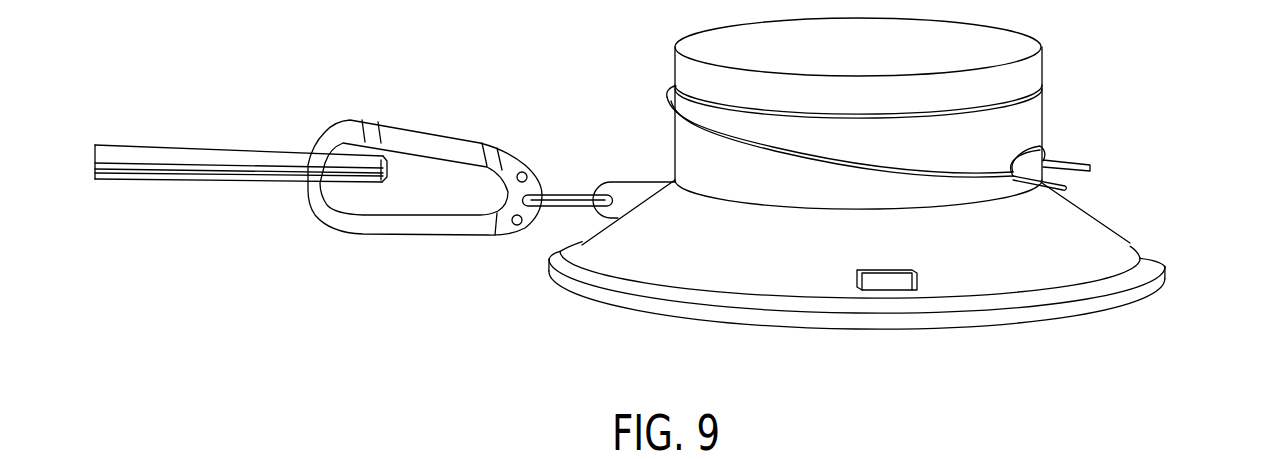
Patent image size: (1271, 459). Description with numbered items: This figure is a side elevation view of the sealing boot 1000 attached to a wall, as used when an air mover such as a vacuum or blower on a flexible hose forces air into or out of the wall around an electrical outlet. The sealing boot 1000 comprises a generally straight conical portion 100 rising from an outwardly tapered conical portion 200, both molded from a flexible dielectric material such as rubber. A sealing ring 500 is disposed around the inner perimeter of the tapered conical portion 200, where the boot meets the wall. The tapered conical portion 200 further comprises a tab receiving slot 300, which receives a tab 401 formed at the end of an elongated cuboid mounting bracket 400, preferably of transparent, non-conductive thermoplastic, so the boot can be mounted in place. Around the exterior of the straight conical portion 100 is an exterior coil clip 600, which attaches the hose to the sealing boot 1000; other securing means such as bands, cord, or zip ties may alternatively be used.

The straight conical portion 100 is at (1027, 80).
The outwardly tapered conical portion 200 is at (765, 275).
The tab receiving slot 300 is at (915, 293).
The mounting bracket 400 is at (213, 155).
The tab 401 is at (873, 290).
The sealing ring 500 is at (1062, 322).
The exterior coil clip 600 is at (1080, 163).
The sealing boot 1000 is at (1168, 200).